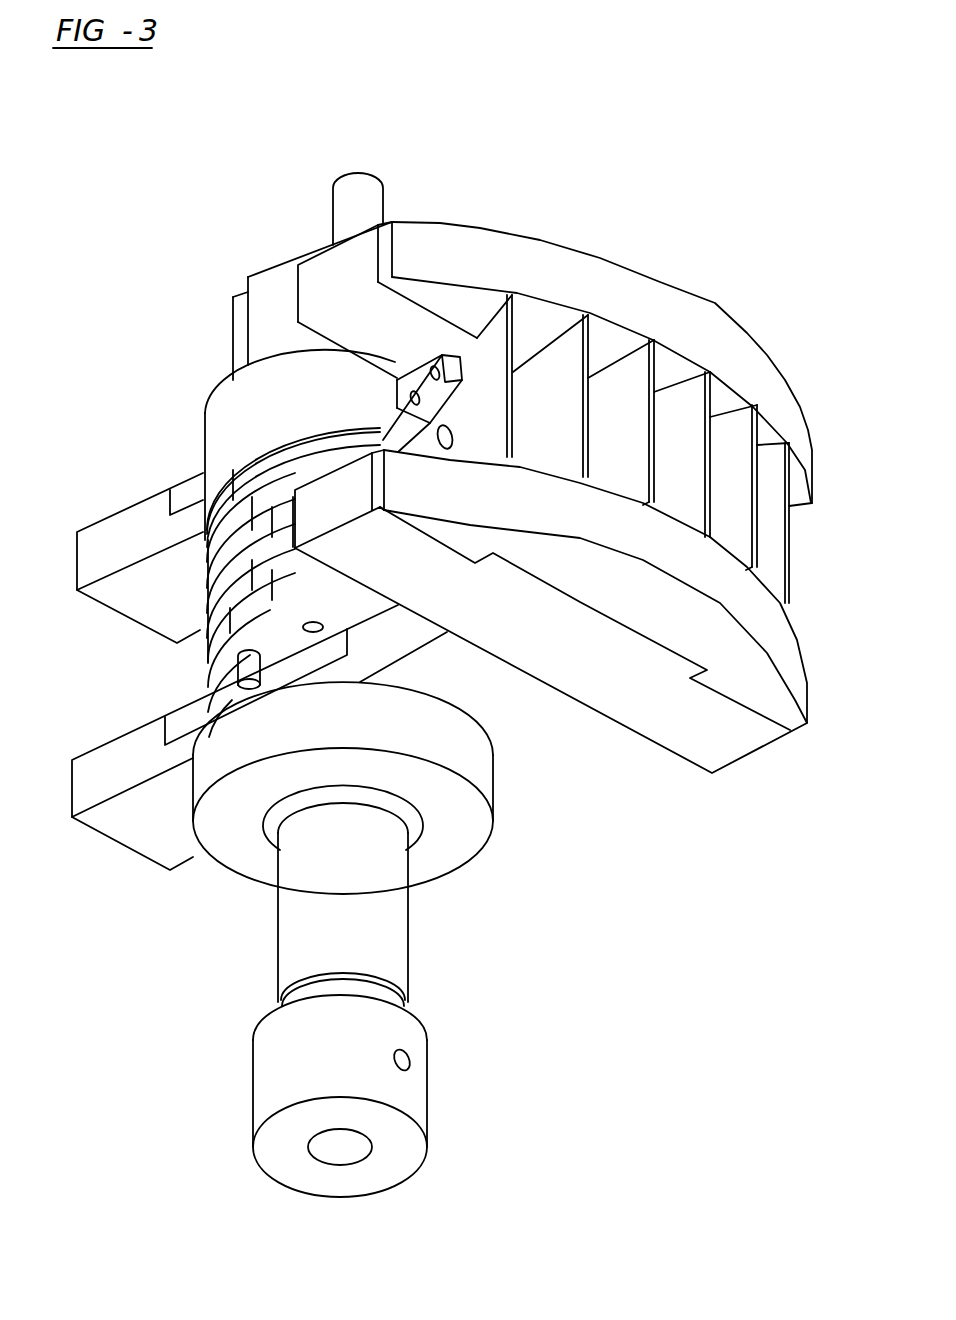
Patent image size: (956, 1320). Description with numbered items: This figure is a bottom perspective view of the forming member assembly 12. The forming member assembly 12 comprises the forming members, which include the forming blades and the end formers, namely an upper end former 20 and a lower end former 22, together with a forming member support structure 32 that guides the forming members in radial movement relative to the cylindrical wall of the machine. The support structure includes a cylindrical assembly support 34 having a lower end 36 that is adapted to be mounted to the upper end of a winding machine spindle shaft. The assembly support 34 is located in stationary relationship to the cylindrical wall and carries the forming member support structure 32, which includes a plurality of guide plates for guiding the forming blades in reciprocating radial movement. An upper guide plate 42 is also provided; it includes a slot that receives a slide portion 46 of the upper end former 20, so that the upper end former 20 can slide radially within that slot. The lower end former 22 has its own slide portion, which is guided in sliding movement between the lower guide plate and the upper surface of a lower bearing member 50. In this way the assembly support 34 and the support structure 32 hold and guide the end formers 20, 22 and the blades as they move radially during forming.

The forming member assembly 12 is at (238, 235).
The upper end former 20 is at (630, 278).
The lower end former 22 is at (773, 628).
The forming member support structure 32 is at (200, 688).
The cylindrical assembly support 34 is at (273, 942).
The lower end 36 is at (428, 1073).
The upper guide plate 42 is at (233, 403).
The slide portion 46 is at (142, 532).
The lower bearing member 50 is at (487, 762).